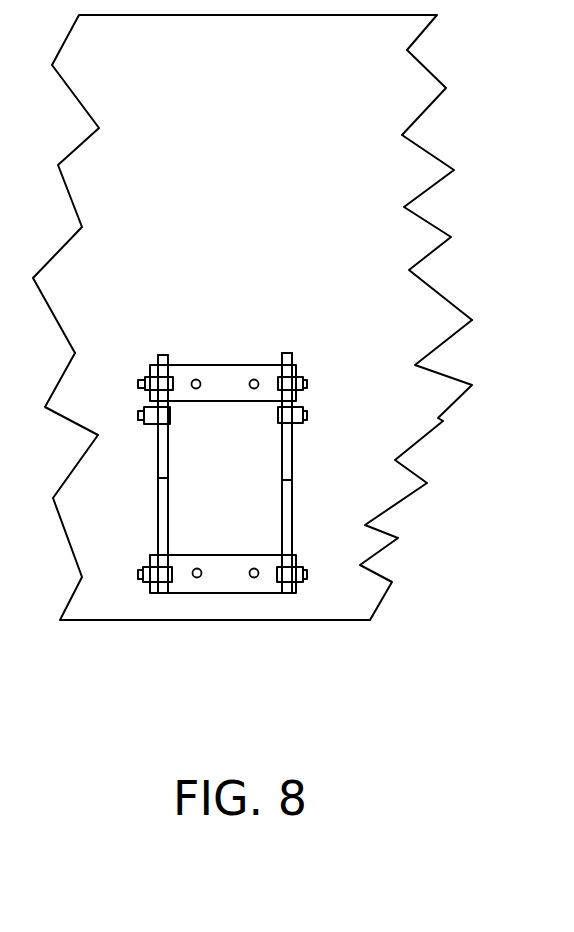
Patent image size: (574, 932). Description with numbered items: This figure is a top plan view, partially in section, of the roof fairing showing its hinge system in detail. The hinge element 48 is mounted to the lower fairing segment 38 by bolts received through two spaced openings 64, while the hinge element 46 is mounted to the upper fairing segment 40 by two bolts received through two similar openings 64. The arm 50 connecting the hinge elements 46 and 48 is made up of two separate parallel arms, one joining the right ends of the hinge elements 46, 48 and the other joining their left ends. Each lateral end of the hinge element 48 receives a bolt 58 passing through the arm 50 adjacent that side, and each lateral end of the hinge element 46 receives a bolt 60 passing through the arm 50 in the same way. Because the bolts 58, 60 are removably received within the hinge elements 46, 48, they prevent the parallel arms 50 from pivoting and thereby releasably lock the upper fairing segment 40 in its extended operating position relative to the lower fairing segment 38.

The lower fairing segment 38 is at (127, 493).
The upper fairing segment 40 is at (272, 167).
The hinge element 46 is at (193, 367).
The hinge element 48 is at (222, 583).
The arm 50 is at (292, 462).
The bolt 58 is at (143, 572).
The bolt 60 is at (143, 384).
The openings 64 is at (254, 389).